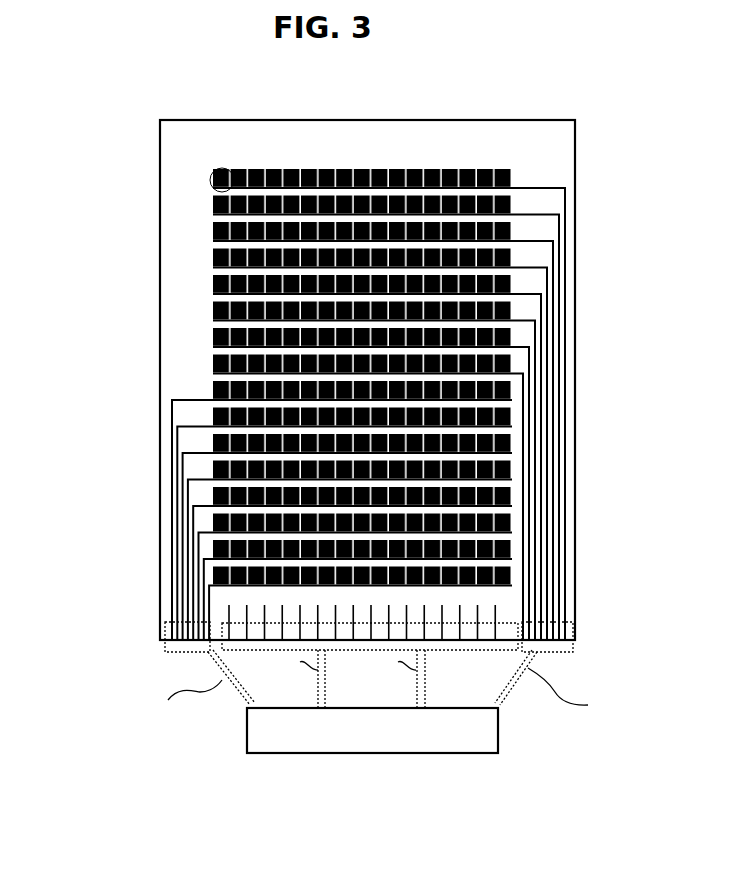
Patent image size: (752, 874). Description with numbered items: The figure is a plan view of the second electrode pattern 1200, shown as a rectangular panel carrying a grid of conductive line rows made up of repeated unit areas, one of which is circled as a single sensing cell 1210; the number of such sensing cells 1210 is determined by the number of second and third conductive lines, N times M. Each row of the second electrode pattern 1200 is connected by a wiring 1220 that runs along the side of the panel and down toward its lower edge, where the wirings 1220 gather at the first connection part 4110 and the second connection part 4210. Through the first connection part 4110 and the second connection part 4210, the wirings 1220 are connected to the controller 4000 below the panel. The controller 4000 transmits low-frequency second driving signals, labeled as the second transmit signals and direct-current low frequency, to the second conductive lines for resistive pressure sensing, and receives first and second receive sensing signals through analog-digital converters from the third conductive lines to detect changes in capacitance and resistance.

The second electrode pattern 1200 is at (215, 146).
The sensing cell 1210 is at (210, 181).
The wiring 1220 is at (566, 183).
The first connection part 4110 is at (165, 650).
The second connection part 4210 is at (480, 652).
The controller 4000 is at (424, 755).